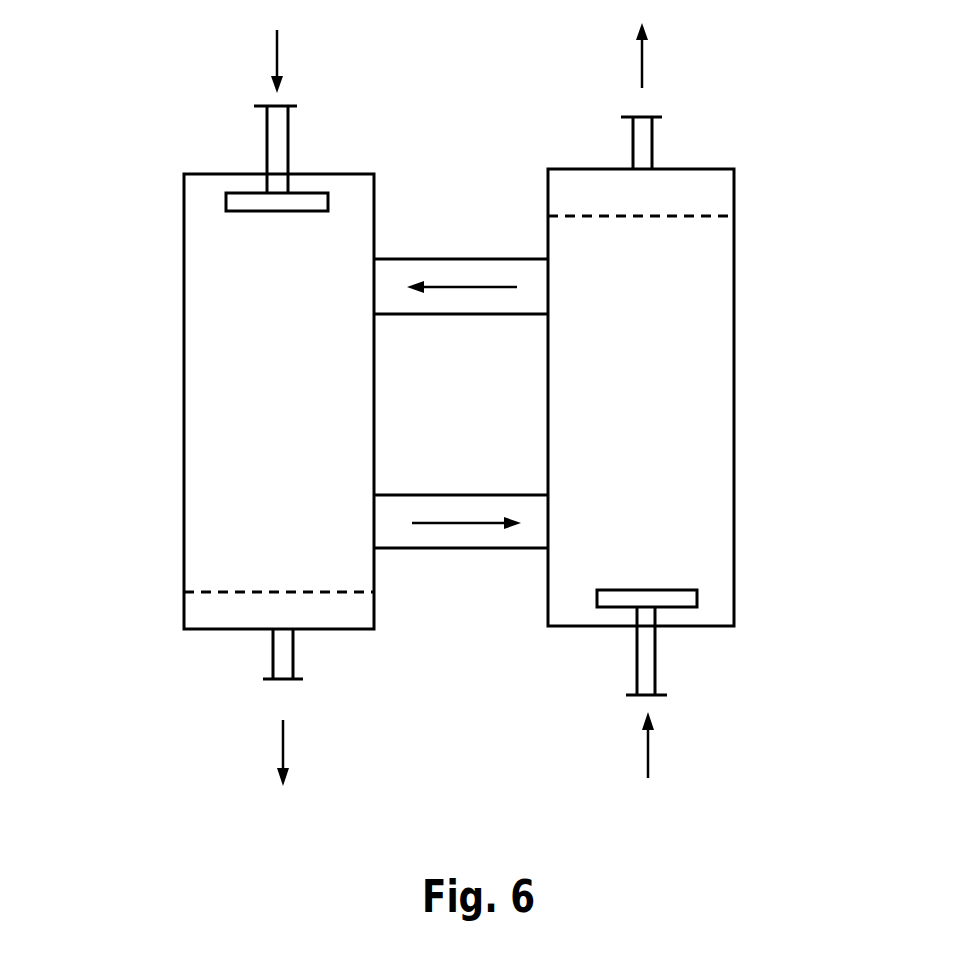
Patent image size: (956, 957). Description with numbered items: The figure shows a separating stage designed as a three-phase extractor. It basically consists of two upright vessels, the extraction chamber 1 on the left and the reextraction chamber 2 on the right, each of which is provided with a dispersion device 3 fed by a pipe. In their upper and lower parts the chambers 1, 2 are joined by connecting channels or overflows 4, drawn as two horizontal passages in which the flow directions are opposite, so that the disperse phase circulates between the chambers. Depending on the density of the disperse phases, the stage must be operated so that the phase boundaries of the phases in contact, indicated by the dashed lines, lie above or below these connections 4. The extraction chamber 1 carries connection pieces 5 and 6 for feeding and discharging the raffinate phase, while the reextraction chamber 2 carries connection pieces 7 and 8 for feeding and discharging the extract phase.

The extraction chamber 1 is at (213, 415).
The reextraction chamber 2 is at (705, 409).
The dispersion device 3 is at (233, 205).
The connecting channels or overflows 4 is at (445, 258).
The connection piece 5 is at (277, 130).
The connection piece 6 is at (278, 664).
The connection piece 7 is at (647, 659).
The connection piece 8 is at (645, 139).